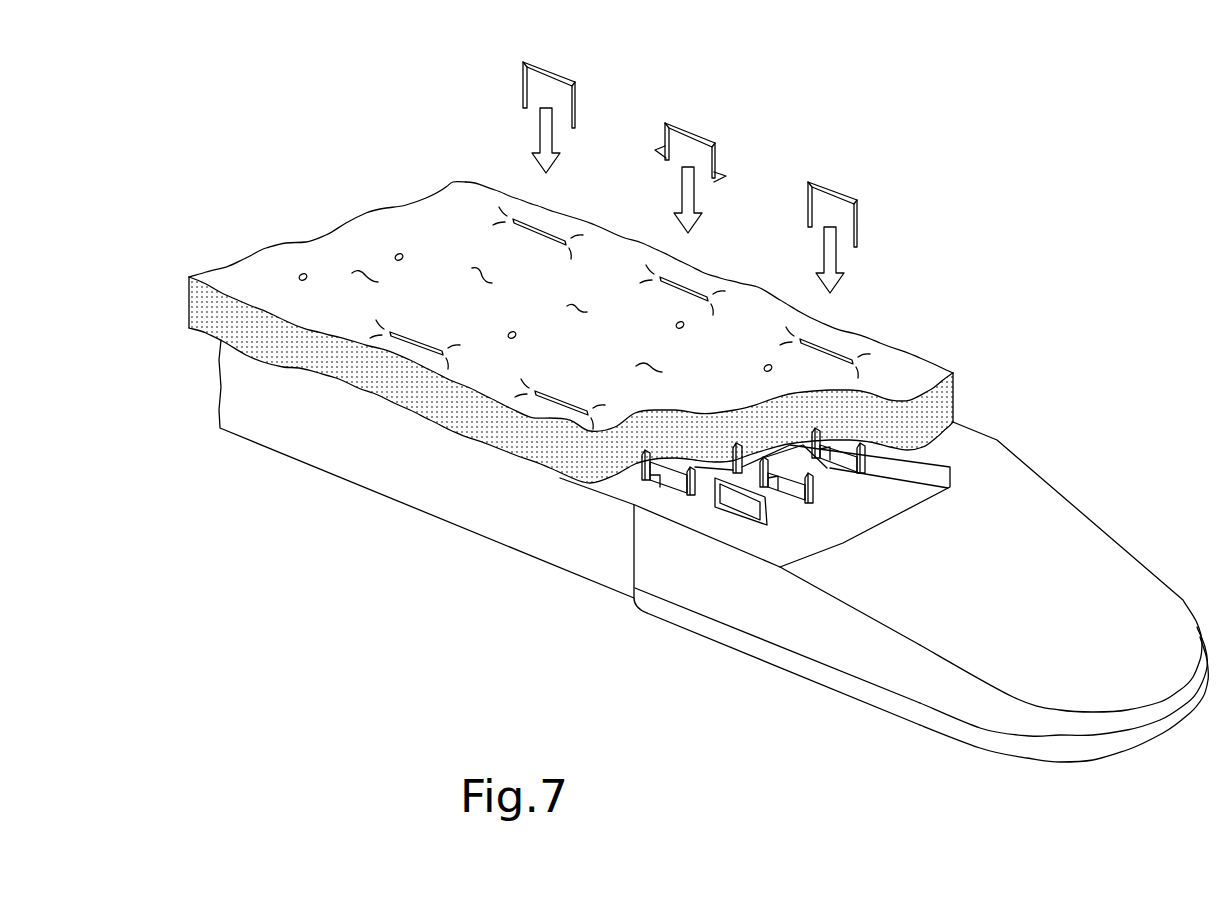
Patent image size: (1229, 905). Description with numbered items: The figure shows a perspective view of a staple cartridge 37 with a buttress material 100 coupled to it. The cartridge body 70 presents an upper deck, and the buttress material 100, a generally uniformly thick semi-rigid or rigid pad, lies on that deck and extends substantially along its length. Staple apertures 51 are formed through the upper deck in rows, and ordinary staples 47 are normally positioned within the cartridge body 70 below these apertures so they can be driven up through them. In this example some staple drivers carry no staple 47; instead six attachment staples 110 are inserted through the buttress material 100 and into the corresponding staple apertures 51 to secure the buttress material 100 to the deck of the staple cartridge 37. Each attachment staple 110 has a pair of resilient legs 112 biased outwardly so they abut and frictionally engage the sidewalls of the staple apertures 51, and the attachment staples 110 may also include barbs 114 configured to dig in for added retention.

The staple cartridge 37 is at (680, 668).
The staple 47 is at (798, 507).
The staple aperture 51 is at (748, 530).
The cartridge body 70 is at (622, 487).
The buttress material 100 is at (935, 377).
The attachment staple 110 is at (545, 64).
The resilient leg 112 is at (521, 90).
The barb 114 is at (660, 150).